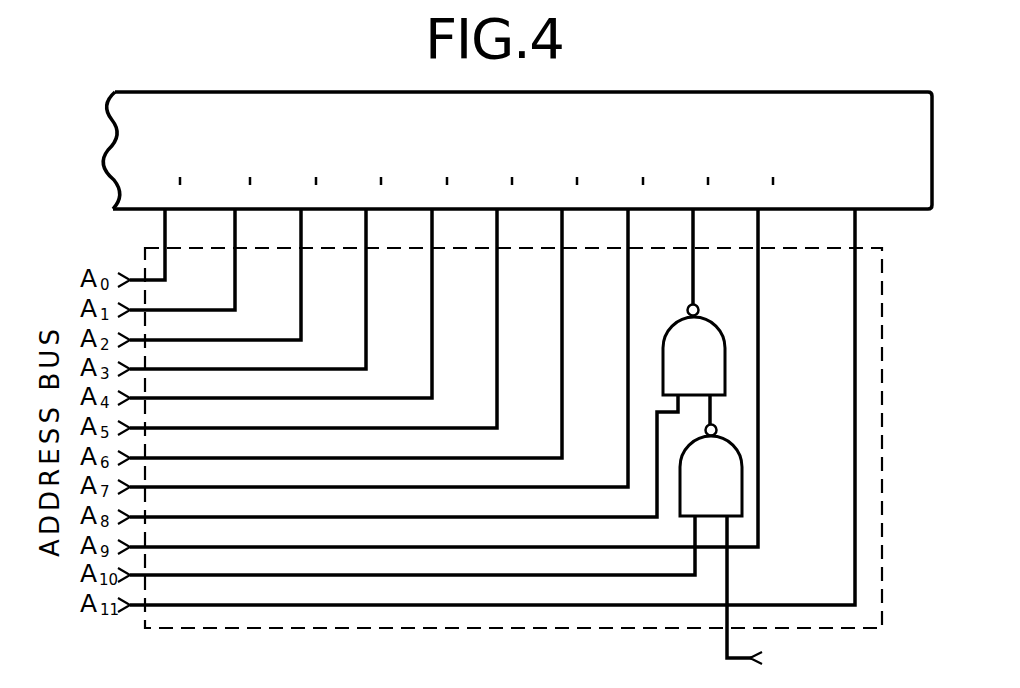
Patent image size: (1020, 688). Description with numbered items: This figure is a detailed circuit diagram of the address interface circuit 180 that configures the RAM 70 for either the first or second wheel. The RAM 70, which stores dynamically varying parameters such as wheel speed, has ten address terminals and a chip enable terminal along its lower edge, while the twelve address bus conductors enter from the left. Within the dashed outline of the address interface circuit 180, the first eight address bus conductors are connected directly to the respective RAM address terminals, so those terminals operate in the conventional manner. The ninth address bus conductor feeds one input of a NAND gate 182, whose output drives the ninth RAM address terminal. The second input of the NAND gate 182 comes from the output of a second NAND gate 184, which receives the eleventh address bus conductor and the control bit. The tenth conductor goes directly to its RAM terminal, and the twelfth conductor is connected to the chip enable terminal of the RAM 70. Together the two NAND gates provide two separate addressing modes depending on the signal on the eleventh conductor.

The RAM 70 is at (765, 97).
The address interface circuit 180 is at (540, 438).
The NAND gate 182 is at (694, 350).
The second NAND gate 184 is at (711, 471).